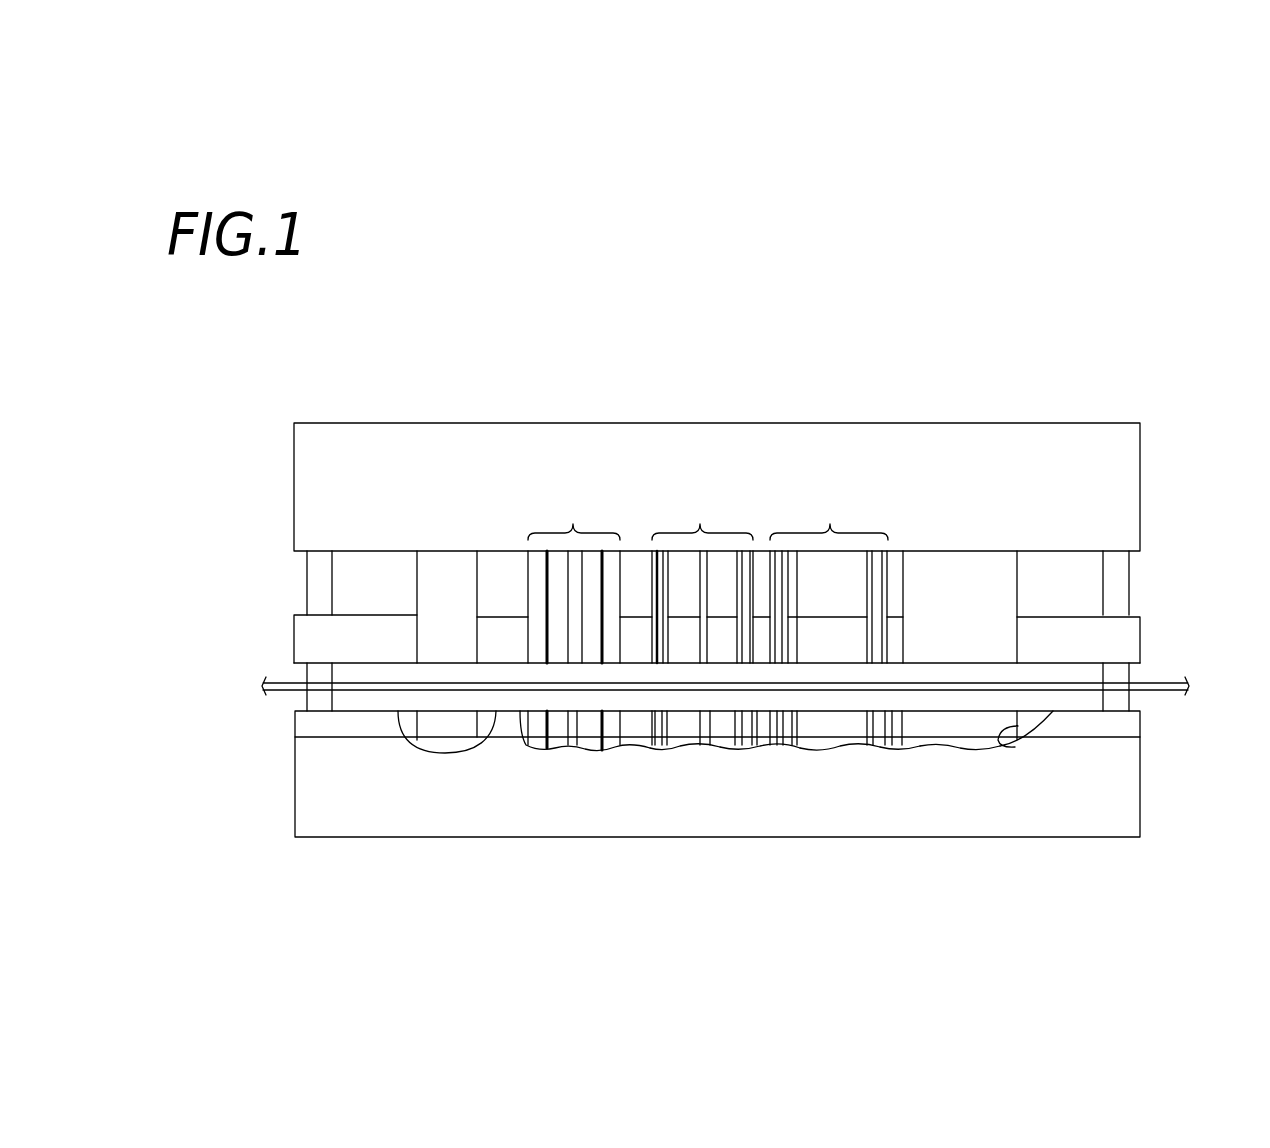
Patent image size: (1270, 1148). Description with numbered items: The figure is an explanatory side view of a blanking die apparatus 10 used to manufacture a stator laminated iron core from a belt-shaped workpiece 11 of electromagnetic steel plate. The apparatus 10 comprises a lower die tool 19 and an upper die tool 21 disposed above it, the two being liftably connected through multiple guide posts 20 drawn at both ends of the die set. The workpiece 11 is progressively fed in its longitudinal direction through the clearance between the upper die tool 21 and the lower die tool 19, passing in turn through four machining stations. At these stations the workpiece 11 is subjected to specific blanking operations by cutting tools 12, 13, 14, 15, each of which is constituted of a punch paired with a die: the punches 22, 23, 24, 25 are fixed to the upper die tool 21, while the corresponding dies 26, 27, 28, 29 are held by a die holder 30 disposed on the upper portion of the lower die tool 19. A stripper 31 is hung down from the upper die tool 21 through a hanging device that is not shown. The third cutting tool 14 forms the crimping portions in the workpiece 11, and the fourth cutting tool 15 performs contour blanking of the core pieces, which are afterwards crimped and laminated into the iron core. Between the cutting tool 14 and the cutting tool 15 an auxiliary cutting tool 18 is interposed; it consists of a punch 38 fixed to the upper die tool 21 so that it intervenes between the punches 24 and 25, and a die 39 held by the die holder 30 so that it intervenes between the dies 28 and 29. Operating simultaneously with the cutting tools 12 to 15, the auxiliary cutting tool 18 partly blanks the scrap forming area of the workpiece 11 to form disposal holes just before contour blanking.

The blanking die apparatus 10 is at (558, 302).
The workpiece 11 is at (1157, 680).
The cutting tool 12 is at (452, 771).
The cutting tool 13 is at (577, 771).
The cutting tool 14 is at (707, 771).
The cutting tool 15 is at (946, 768).
The auxiliary cutting tool 18 is at (836, 769).
The lower die tool 19 is at (1130, 781).
The guide posts 20 is at (315, 583).
The upper die tool 21 is at (1118, 490).
The punch 22 is at (446, 577).
The punch 23 is at (573, 522).
The punch 24 is at (700, 522).
The punch 25 is at (963, 580).
The die 26 is at (418, 743).
The die 27 is at (523, 743).
The die 28 is at (647, 734).
The die 29 is at (998, 743).
The die holder 30 is at (281, 727).
The stripper 31 is at (1128, 640).
The punch 38 is at (830, 522).
The die 39 is at (806, 754).